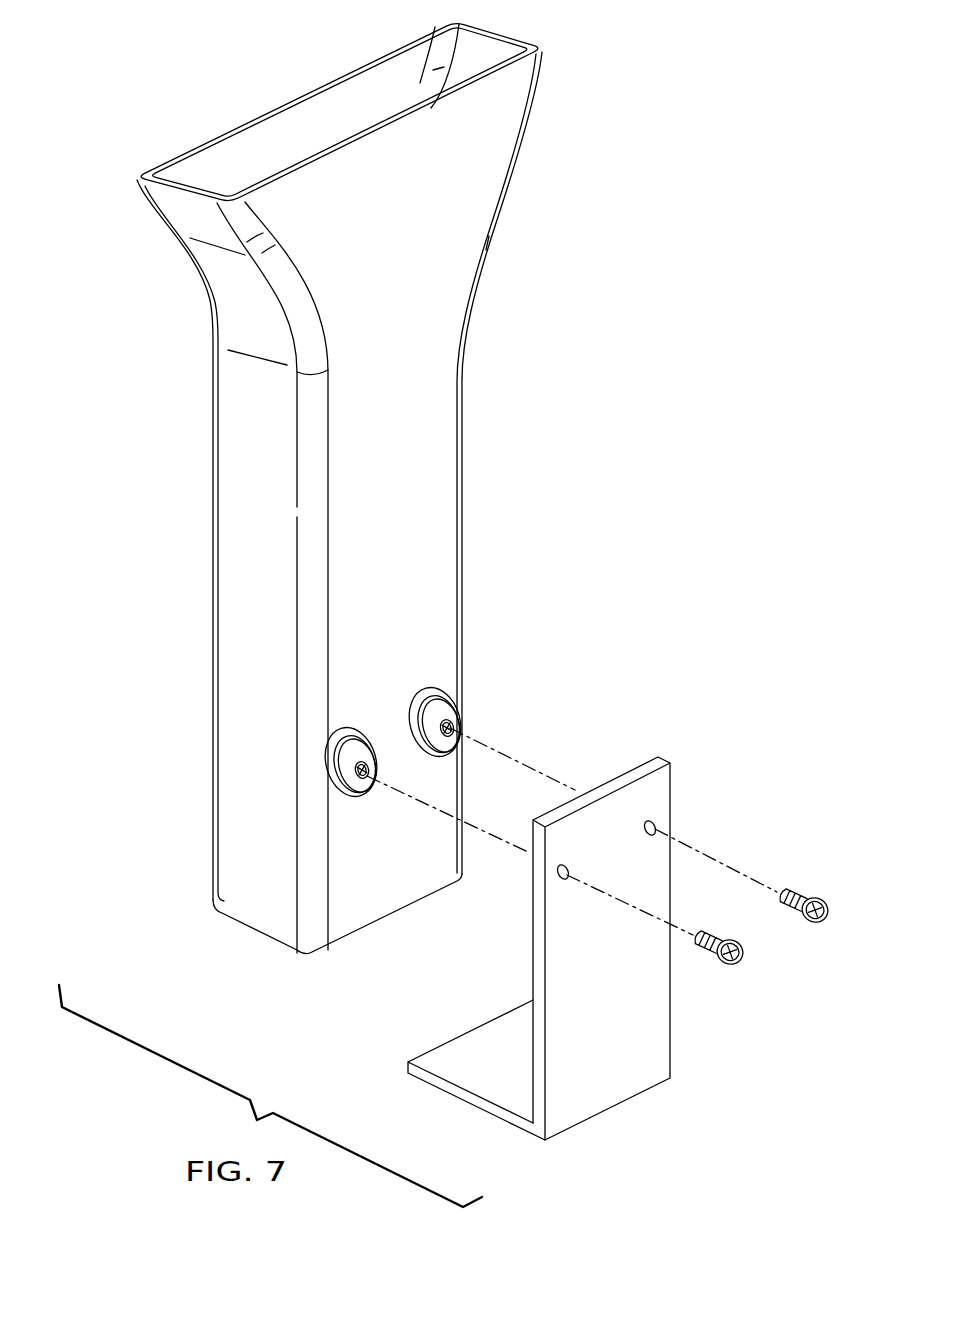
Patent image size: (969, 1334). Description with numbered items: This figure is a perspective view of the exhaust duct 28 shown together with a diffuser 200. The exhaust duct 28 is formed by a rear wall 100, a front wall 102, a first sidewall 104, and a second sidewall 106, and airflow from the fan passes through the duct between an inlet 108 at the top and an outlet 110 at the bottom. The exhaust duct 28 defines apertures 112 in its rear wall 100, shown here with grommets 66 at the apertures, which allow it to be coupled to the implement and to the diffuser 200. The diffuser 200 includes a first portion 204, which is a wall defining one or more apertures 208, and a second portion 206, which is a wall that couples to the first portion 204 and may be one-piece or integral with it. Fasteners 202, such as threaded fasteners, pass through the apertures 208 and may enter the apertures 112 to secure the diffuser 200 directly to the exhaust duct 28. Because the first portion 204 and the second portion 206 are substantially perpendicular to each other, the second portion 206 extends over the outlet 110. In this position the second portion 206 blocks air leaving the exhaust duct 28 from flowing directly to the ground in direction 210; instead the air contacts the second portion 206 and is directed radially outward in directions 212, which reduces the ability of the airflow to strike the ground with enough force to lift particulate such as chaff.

The exhaust duct 28 is at (618, 600).
The fastener grommets 66 is at (453, 726).
The rear wall 100 is at (373, 883).
The front wall 102 is at (213, 680).
The first sidewall 104 is at (462, 558).
The second sidewall 106 is at (243, 893).
The inlet 108 is at (290, 103).
The outlet 110 is at (312, 953).
The apertures 112 is at (432, 727).
The diffuser 200 is at (536, 961).
The fasteners 202 is at (805, 917).
The first portion 204 is at (610, 1088).
The second portion 206 is at (478, 1108).
The apertures 208 is at (647, 824).
The direction 210 is at (99, 960).
The directions 212 is at (536, 798).